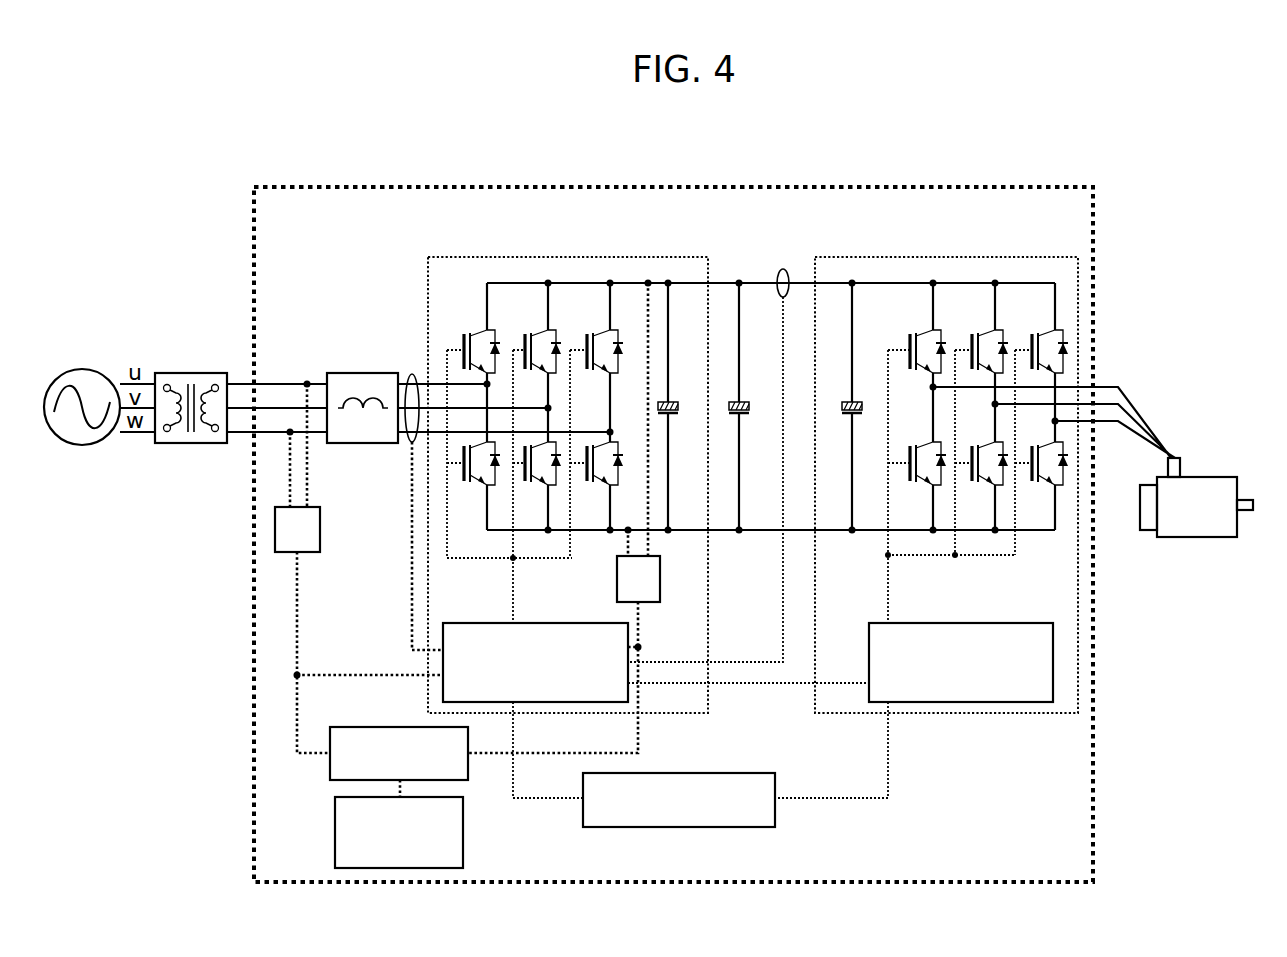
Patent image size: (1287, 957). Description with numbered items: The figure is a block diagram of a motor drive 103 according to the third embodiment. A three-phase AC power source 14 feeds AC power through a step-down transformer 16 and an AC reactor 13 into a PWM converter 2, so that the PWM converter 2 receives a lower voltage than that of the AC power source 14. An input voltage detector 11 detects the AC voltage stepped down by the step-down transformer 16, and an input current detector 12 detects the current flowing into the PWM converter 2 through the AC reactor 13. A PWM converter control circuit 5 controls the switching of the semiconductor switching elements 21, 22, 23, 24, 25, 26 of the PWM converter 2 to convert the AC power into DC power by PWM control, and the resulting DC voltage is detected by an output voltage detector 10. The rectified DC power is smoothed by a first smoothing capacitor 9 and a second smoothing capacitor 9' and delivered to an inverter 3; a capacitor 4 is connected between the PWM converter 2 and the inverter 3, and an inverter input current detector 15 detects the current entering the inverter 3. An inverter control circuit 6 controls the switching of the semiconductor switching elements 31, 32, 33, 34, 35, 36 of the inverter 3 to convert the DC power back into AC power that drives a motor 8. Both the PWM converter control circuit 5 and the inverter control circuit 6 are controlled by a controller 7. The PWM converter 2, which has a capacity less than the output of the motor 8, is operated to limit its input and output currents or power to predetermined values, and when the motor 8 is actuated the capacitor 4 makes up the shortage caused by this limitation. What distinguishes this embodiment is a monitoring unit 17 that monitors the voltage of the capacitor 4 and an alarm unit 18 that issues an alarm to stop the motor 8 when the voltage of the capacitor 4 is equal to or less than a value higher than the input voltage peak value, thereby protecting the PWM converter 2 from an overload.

The motor drive 103 is at (455, 187).
The PWM converter 2 is at (540, 257).
The inverter 3 is at (955, 257).
The inverter input current detector 15 is at (783, 270).
The AC power source 14 is at (91, 368).
The step-down transformer 16 is at (192, 373).
The AC reactor 13 is at (344, 373).
The input current detector 12 is at (410, 374).
The input voltage detector 11 is at (320, 527).
The semiconductor switching element 21 is at (473, 336).
The semiconductor switching element 22 is at (473, 481).
The semiconductor switching element 23 is at (537, 336).
The semiconductor switching element 24 is at (537, 481).
The semiconductor switching element 25 is at (596, 336).
The semiconductor switching element 26 is at (596, 481).
The first smoothing capacitor 9 is at (676, 406).
The capacitor 4 is at (755, 395).
The second smoothing capacitor 9' is at (862, 406).
The semiconductor switching element 31 is at (917, 336).
The semiconductor switching element 32 is at (917, 481).
The semiconductor switching element 33 is at (981, 336).
The semiconductor switching element 34 is at (981, 481).
The semiconductor switching element 35 is at (1041, 336).
The semiconductor switching element 36 is at (1041, 481).
The motor 8 is at (1220, 477).
The PWM converter control circuit 5 is at (550, 623).
The output voltage detector 10 is at (660, 578).
The inverter control circuit 6 is at (998, 623).
The monitoring unit 17 is at (393, 727).
The controller 7 is at (697, 773).
The alarm unit 18 is at (463, 836).